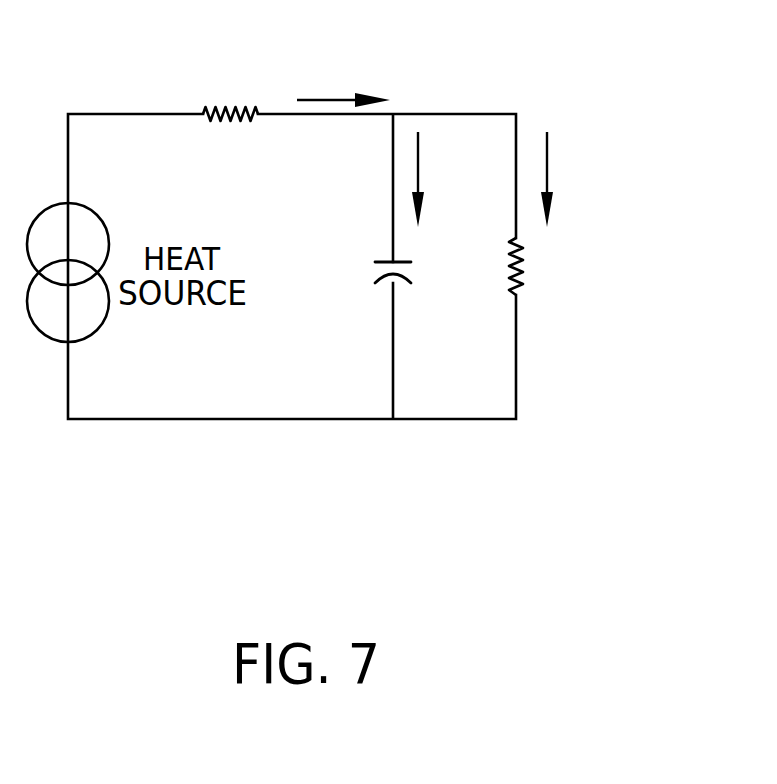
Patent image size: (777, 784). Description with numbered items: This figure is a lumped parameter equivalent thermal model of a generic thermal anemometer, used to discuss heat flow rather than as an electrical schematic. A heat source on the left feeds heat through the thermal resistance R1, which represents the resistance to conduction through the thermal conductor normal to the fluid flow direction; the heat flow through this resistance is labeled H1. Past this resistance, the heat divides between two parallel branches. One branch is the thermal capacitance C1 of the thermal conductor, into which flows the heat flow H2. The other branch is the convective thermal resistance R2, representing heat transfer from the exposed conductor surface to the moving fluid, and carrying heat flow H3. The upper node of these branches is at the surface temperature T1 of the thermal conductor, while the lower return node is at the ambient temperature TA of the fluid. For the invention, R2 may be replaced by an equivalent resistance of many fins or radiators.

The thermal resistance R1 is at (230, 90).
The heat flow through R1 H1 is at (343, 81).
The heat flow through C1 H2 is at (452, 179).
The heat flow through R2 H3 is at (579, 179).
The thermal capacitance C1 is at (423, 270).
The convective thermal resistance R2 is at (615, 271).
The surface temperature T1 is at (516, 114).
The ambient temperature TA is at (516, 419).